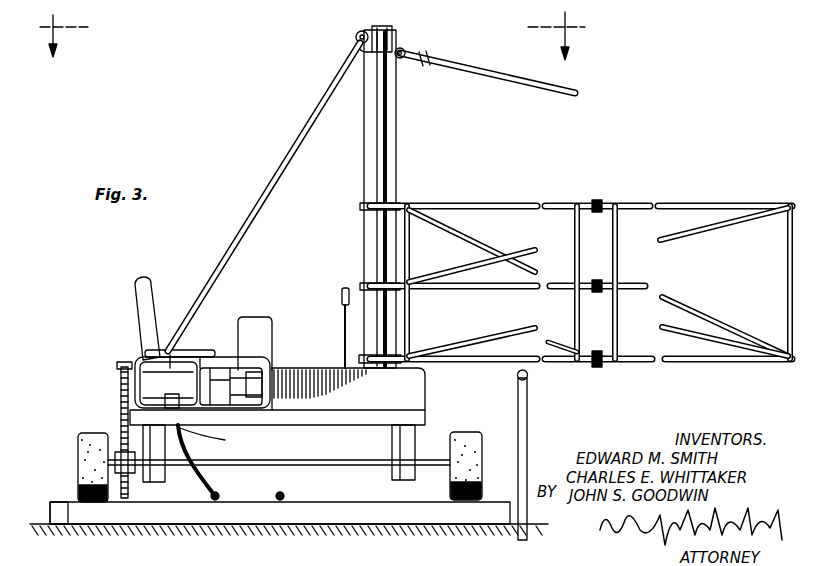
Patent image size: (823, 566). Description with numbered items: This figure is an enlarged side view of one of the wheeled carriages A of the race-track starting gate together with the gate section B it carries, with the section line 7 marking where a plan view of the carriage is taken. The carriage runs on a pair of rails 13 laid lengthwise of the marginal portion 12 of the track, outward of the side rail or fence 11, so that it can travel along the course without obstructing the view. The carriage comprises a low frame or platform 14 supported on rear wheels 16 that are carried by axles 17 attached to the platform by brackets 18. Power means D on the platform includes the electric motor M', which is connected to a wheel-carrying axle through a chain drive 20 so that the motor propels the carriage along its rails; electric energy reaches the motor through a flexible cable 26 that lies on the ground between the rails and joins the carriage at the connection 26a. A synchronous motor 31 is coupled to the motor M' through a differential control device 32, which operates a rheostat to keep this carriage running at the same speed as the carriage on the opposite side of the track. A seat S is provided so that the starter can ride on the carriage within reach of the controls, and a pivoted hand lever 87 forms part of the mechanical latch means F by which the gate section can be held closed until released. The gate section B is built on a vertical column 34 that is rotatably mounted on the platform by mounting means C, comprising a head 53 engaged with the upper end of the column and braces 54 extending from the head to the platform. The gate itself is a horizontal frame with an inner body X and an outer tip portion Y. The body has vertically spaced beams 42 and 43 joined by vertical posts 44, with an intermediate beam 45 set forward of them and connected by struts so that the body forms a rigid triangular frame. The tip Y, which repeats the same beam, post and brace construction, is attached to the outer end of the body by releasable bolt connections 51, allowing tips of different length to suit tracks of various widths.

The section line 7— 7 is at (312, 36).
The side rail 11 is at (528, 400).
The marginal portion 12 is at (60, 518).
The rail 13 is at (92, 516).
The platform 14 is at (300, 405).
The rear supporting wheel 16 is at (78, 428).
The axle 17 is at (292, 460).
The bracket 18 is at (160, 447).
The chain drive 20 is at (118, 405).
The flexible cable 26 is at (278, 492).
The cable connection 26a is at (217, 435).
The synchronous motor 31 is at (254, 370).
The differential control device 32 is at (206, 352).
The column 34 is at (398, 120).
The upper beam 42 is at (468, 203).
The lower beam 43 is at (490, 352).
The vertical post 44 is at (412, 244).
The intermediate beam 45 is at (520, 292).
The bolt connection 51 is at (596, 200).
The head 53 is at (392, 32).
The brace 54 is at (370, 143).
The hand lever 87 is at (342, 292).
The carriage A is at (360, 357).
The gate section B is at (599, 273).
The mounting means C is at (269, 197).
The power means D is at (141, 349).
The latch means F is at (334, 339).
The motor M' is at (181, 372).
The seat S is at (158, 276).
The body X is at (472, 258).
The tip portion Y is at (748, 204).